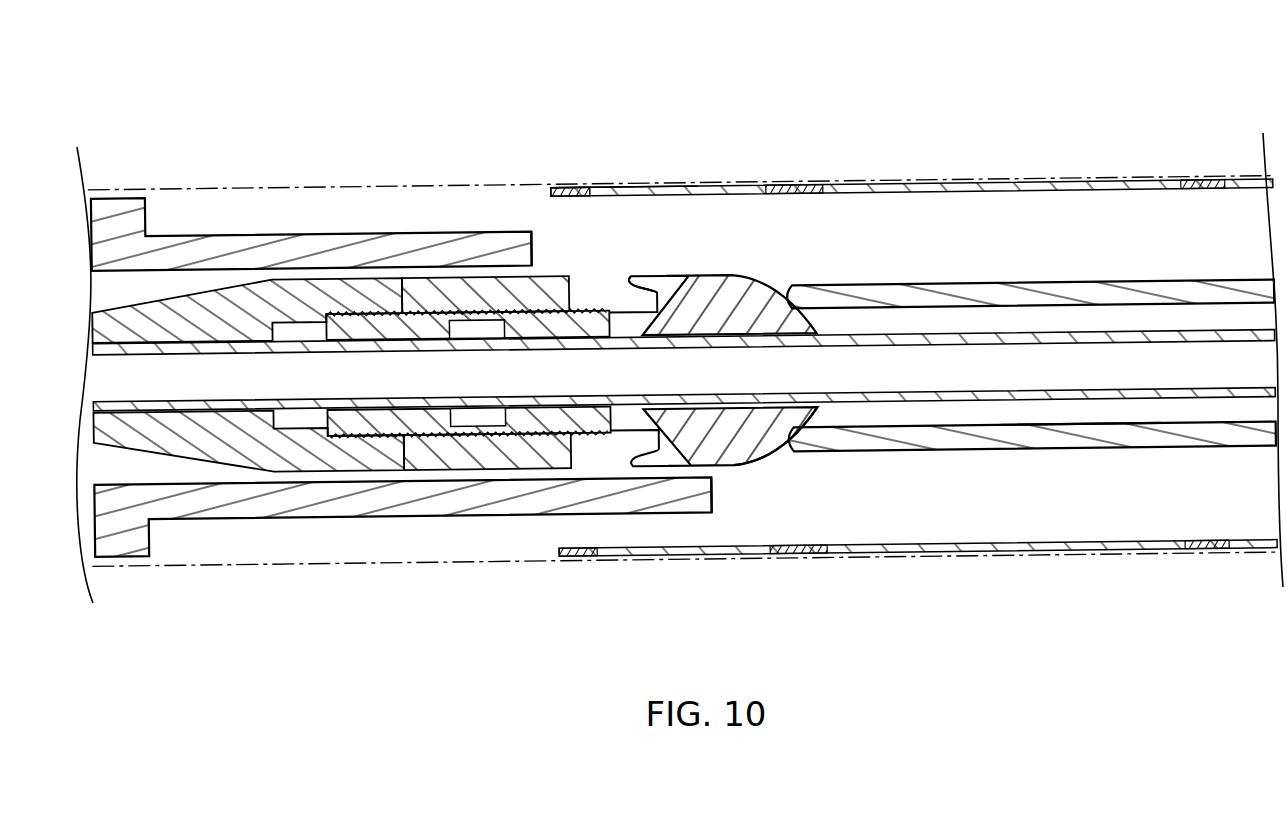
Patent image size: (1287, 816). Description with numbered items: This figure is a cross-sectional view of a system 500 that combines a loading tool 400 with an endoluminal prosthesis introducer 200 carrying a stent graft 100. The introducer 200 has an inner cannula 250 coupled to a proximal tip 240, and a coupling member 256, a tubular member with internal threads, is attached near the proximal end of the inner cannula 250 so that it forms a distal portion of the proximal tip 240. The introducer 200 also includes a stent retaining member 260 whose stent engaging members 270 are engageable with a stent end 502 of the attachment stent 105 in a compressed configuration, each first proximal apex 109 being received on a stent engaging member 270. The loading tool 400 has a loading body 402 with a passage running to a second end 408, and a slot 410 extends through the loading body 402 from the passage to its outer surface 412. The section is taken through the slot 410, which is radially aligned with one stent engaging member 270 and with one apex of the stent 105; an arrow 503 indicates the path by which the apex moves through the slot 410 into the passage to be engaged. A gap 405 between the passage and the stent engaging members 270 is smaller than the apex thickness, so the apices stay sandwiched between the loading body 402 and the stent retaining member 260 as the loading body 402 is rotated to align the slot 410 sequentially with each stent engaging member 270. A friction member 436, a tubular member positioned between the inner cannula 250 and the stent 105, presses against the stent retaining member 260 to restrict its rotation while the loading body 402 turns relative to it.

The system 500 is at (262, 95).
The loading tool 400 is at (252, 215).
The loading body 402 is at (310, 250).
The outer surface 412 is at (396, 517).
The proximal tip 240 is at (178, 303).
The coupling member 256 is at (450, 282).
The slot 410 is at (545, 226).
The attachment stent 105 is at (620, 281).
The first proximal apex 109 is at (583, 190).
The arrow 503 is at (590, 247).
The stent engaging member 270 is at (653, 280).
The stent graft 100 is at (880, 183).
The introducer 200 is at (936, 324).
The inner cannula 250 is at (1020, 338).
The stent retaining member 260 is at (776, 456).
The friction member 436 is at (1077, 442).
The second end 408 is at (712, 505).
The gap 405 is at (690, 471).
The stent end 502 is at (571, 566).